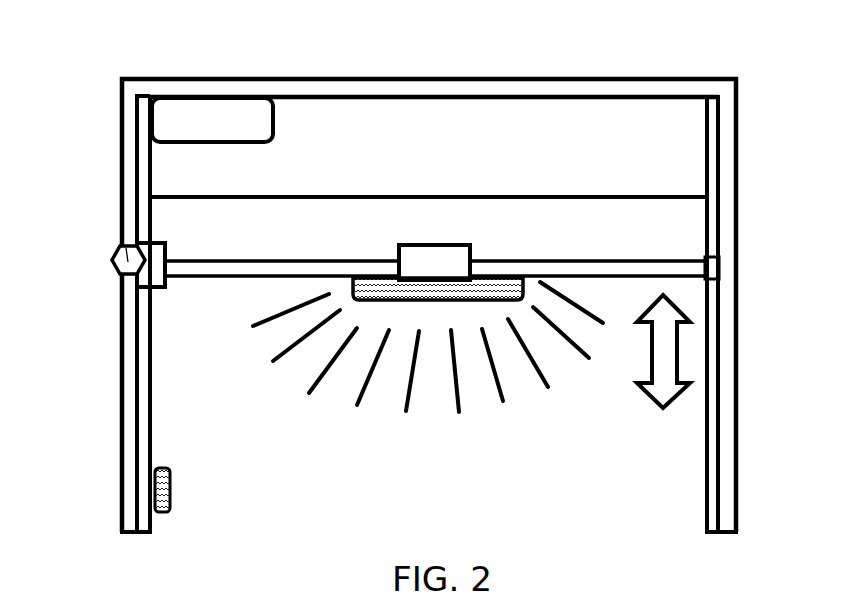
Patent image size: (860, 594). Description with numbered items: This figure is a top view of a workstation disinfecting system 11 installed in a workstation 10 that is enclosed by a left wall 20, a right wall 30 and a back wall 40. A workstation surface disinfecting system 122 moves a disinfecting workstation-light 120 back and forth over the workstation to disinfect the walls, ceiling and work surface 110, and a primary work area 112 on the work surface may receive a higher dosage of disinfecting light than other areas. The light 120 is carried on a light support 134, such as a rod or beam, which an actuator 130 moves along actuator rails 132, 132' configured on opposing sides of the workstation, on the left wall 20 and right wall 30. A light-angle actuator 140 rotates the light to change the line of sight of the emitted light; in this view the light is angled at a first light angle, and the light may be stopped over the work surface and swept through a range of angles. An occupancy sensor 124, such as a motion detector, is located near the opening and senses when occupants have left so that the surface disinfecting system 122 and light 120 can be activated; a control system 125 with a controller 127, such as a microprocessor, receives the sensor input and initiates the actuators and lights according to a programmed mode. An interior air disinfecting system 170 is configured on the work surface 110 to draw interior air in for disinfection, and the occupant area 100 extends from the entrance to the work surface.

The workstation disinfecting system 11 is at (116, 64).
The workstation 10 is at (718, 95).
The back wall 40 is at (645, 90).
The left wall 20 is at (127, 465).
The right wall 30 is at (724, 344).
The actuator rail 132 is at (96, 314).
The actuator rail 132' is at (760, 314).
The work surface 110 is at (660, 140).
The primary work area 112 is at (672, 173).
The interior air disinfecting system 170 is at (227, 107).
The light support 134 is at (213, 268).
The workstation surface disinfecting system 122 is at (497, 238).
The actuator 130 is at (167, 278).
The control system 125 is at (125, 265).
The controller 127 is at (126, 254).
The light-angle actuator 140 is at (443, 278).
The disinfecting workstation-light 120 is at (363, 275).
The occupant area 100 is at (630, 440).
The occupancy sensor 124 is at (153, 497).